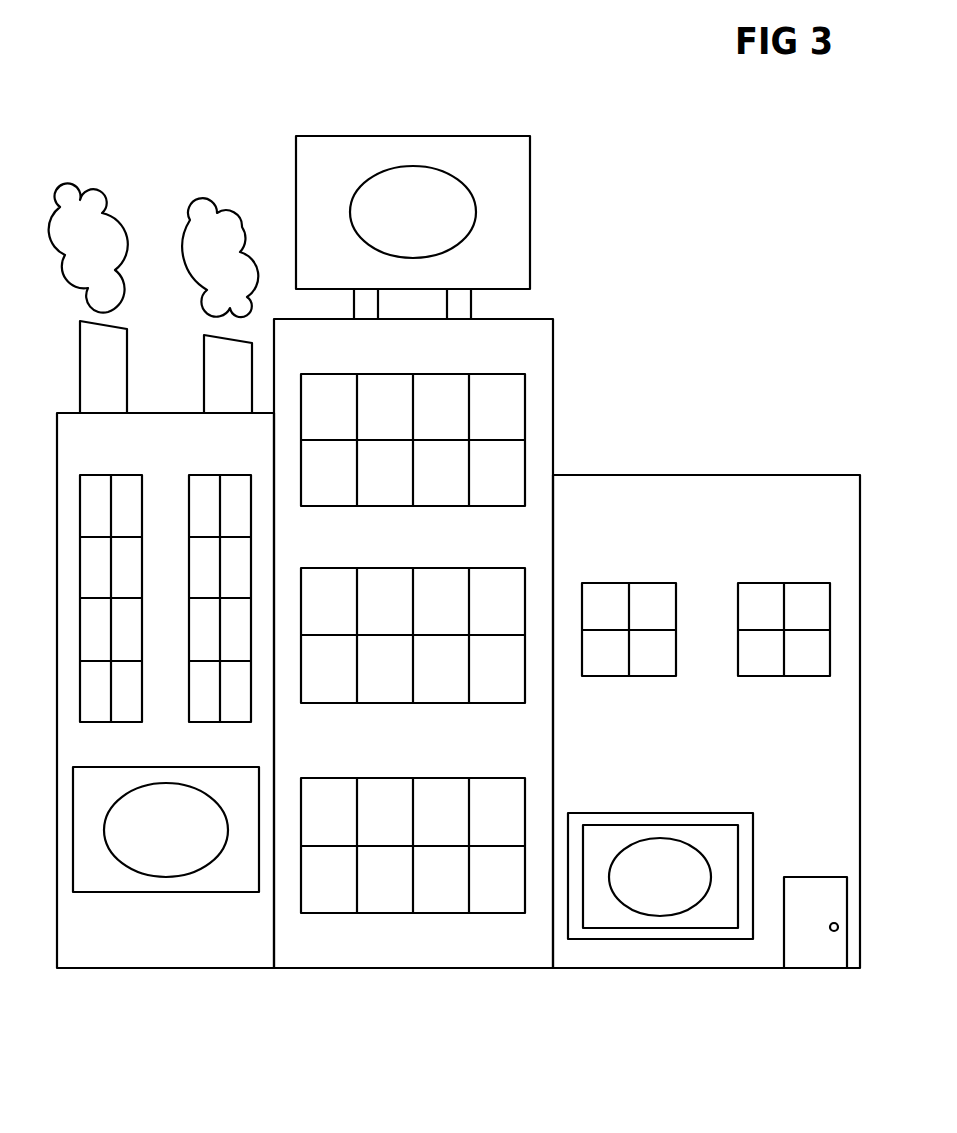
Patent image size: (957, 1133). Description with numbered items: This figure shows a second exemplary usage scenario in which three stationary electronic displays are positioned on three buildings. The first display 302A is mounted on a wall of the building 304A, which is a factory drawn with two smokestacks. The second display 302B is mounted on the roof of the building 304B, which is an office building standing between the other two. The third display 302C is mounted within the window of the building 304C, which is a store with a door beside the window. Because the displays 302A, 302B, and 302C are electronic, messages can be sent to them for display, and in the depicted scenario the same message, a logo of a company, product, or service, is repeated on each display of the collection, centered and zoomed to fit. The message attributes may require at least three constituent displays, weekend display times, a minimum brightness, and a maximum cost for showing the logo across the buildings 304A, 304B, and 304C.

The stationary display 302A is at (149, 891).
The stationary display 302B is at (531, 222).
The stationary display 302C is at (724, 784).
The building 304A is at (182, 968).
The building 304B is at (408, 968).
The building 304C is at (657, 968).